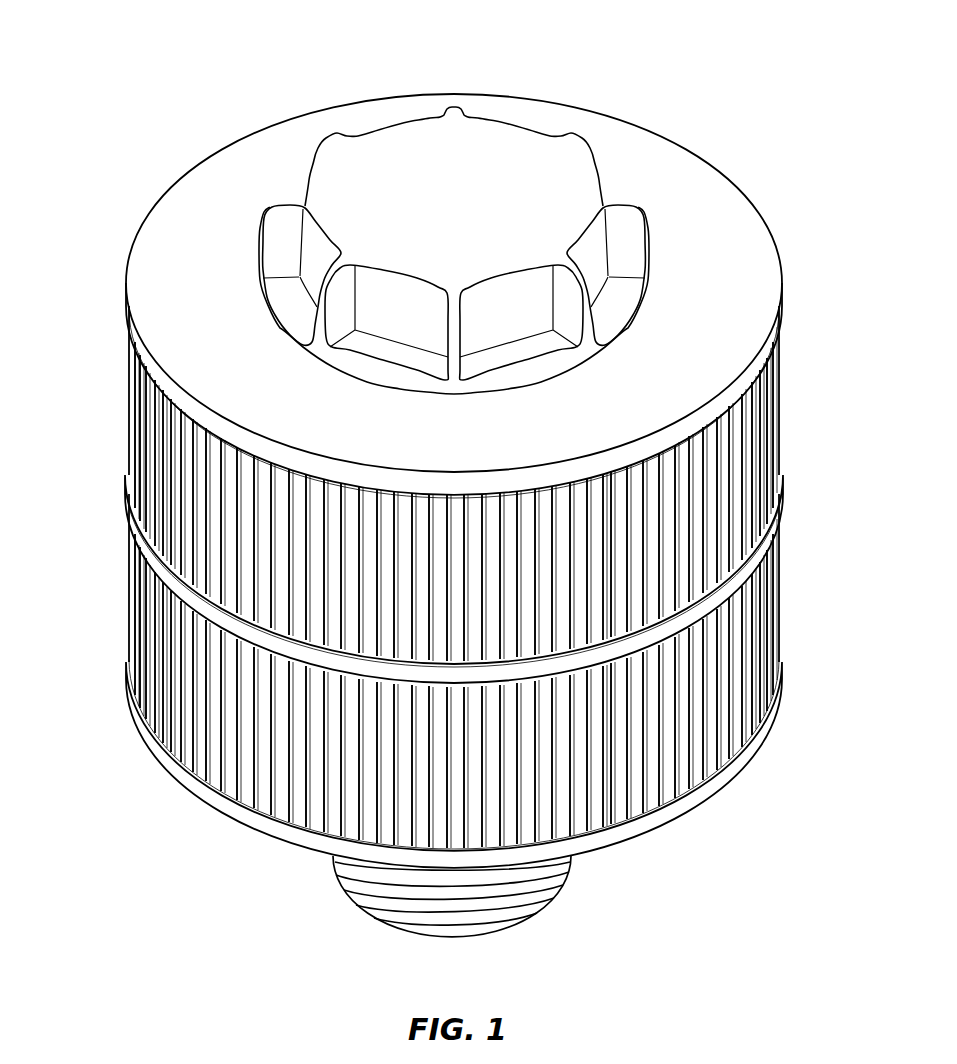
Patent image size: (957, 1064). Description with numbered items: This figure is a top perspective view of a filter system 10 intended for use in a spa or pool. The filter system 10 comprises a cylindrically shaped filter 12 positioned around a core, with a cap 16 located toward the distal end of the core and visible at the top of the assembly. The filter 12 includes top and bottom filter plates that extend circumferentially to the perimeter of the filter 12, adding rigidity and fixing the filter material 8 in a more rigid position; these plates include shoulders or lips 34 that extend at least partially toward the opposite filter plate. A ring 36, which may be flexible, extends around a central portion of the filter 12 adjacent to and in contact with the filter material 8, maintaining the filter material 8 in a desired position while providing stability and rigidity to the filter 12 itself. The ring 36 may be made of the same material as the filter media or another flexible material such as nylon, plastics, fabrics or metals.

The filter system 10 is at (148, 104).
The filter 12 is at (760, 250).
The cap 16 is at (530, 155).
The filter material 8 is at (747, 647).
The shoulders or lips 34 is at (757, 367).
The ring 36 is at (762, 550).